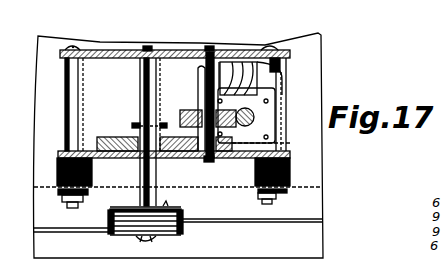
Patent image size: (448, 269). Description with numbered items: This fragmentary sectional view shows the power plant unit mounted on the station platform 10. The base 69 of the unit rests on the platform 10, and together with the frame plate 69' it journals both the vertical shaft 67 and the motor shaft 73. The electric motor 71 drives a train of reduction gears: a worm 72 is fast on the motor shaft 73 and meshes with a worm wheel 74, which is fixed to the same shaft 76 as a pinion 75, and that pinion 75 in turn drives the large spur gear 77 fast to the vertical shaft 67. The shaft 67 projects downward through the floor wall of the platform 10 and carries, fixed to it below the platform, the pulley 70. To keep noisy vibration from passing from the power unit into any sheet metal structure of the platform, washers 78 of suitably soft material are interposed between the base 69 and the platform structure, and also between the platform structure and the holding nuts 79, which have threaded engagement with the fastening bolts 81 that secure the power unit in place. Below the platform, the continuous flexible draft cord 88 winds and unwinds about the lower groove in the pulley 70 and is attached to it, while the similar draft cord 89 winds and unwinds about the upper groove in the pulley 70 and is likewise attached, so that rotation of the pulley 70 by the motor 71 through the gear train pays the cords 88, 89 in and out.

The platform 10 is at (322, 191).
The vertical shaft 67 is at (148, 173).
The base 69 is at (181, 147).
The frame plate 69' is at (310, 97).
The pulley 70 is at (181, 228).
The electric motor 71 is at (262, 82).
The worm 72 is at (250, 115).
The motor shaft 73 is at (270, 112).
The worm wheel 74 is at (187, 110).
The pinion 75 is at (224, 135).
The shaft 76 is at (199, 68).
The large spur gear 77 is at (106, 137).
The washers 78 is at (57, 170).
The holding nuts 79 is at (62, 200).
The fastening bolts 81 is at (76, 47).
The draft cord 88 is at (43, 230).
The draft cord 89 is at (267, 219).